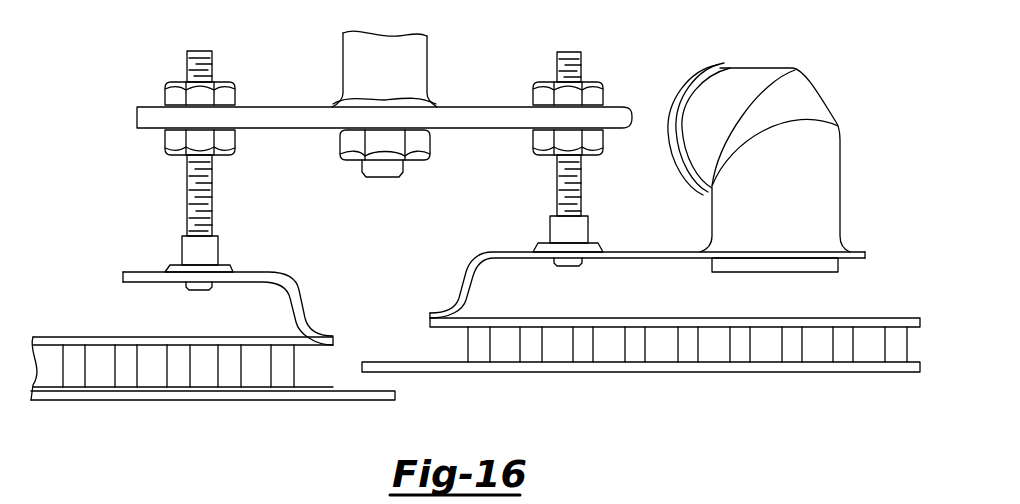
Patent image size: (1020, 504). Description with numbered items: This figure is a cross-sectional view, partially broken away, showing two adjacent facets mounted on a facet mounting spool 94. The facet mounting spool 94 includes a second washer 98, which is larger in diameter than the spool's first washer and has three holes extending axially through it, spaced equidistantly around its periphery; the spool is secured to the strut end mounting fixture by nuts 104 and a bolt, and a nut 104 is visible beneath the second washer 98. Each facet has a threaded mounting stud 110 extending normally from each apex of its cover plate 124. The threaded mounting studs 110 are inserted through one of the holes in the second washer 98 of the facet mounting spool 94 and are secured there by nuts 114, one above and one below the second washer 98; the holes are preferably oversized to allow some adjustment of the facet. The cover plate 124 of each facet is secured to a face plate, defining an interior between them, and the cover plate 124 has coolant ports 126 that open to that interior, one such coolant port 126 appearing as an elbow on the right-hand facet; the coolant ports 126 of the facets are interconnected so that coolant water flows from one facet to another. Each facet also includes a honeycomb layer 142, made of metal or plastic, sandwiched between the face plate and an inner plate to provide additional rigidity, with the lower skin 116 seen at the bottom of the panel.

The facet mounting spool 94 is at (418, 55).
The second washer 98 is at (506, 107).
The nuts 104 is at (427, 148).
The threaded mounting stud 110 is at (213, 67).
The nuts 114 is at (163, 147).
The lower skin 116 is at (463, 372).
The cover plate 124 is at (254, 271).
The coolant ports 126 is at (822, 97).
The honeycomb layer 142 is at (73, 355).